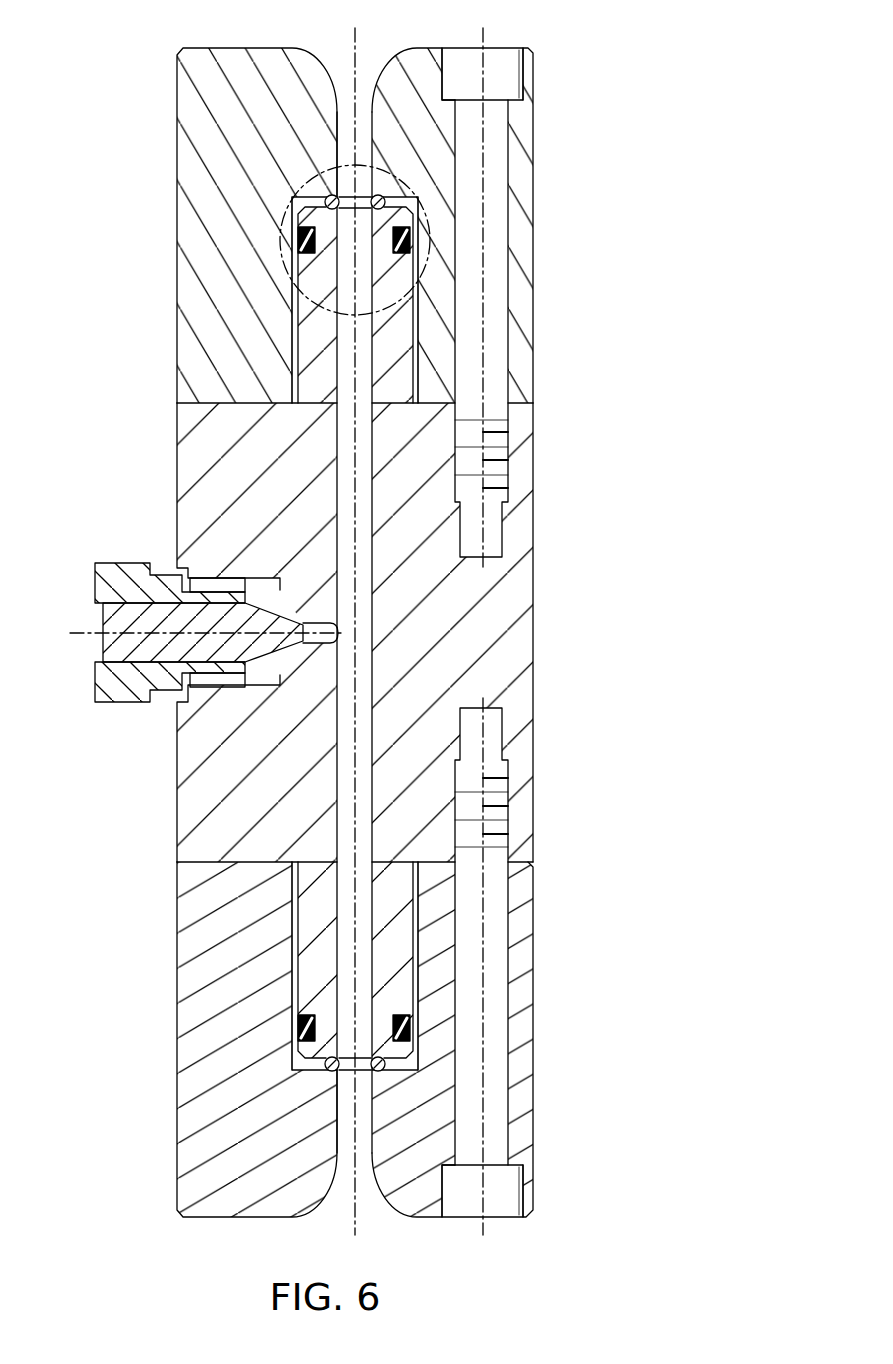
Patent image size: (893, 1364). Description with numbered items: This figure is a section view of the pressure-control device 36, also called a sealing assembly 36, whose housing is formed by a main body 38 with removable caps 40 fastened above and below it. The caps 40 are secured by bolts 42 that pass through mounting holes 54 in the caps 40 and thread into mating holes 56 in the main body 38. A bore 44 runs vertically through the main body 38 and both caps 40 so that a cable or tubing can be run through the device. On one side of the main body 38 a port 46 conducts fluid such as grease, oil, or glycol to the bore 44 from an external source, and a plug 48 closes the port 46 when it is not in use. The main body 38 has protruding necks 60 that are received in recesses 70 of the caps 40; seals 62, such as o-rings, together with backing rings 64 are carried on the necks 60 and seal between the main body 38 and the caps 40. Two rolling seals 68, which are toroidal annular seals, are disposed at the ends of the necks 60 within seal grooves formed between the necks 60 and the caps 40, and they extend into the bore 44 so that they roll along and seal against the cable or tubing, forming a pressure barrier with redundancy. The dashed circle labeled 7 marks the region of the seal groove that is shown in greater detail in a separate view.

The pressure-control device 36 is at (143, 56).
The main body 38 is at (177, 770).
The caps 40 is at (177, 108).
The bolts 42 is at (501, 62).
The bore 44 is at (347, 113).
The ports 46 is at (313, 630).
The plugs 48 is at (97, 692).
The mounting holes 54 is at (508, 246).
The mating holes 56 is at (508, 444).
The necks 60 is at (297, 343).
The seals 62 is at (298, 240).
The backing rings 64 is at (298, 256).
The rolling seals 68 is at (325, 200).
The recesses 70 is at (418, 318).
The detail view circle for FIG. 7 is at (293, 194).